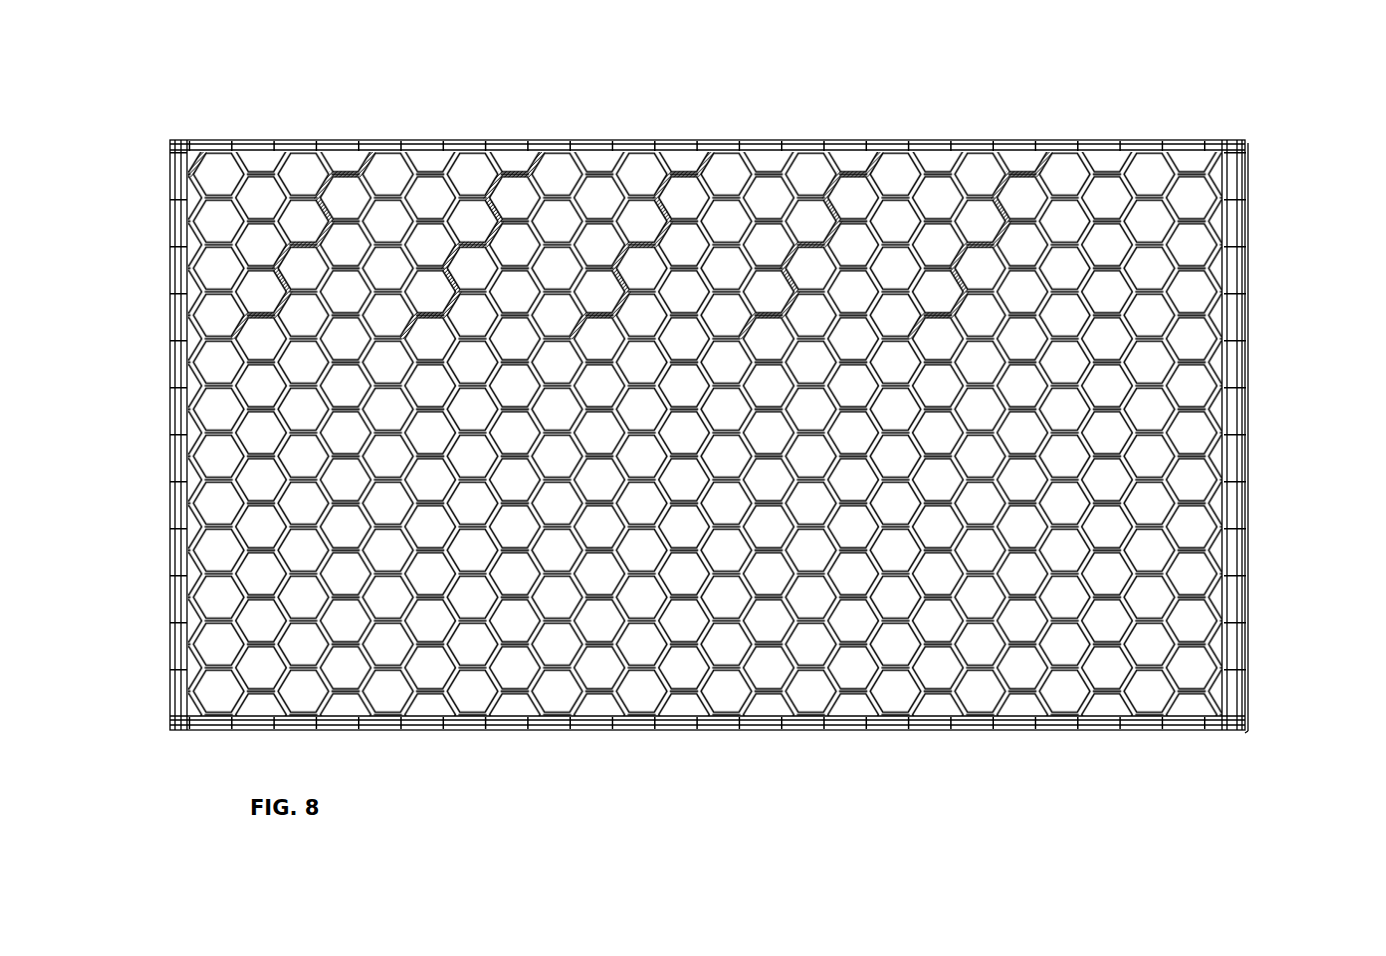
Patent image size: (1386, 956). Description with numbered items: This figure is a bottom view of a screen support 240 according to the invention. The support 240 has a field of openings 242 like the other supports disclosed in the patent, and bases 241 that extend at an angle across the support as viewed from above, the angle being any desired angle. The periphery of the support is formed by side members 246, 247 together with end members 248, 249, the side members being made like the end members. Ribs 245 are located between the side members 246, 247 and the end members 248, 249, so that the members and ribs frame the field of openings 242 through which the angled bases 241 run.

The support 240 is at (178, 192).
The bases 241 is at (356, 162).
The openings 242 is at (220, 262).
The ribs 245 is at (300, 150).
The side member 246 is at (562, 150).
The side member 247 is at (676, 150).
The end member 248 is at (172, 446).
The end member 249 is at (182, 515).